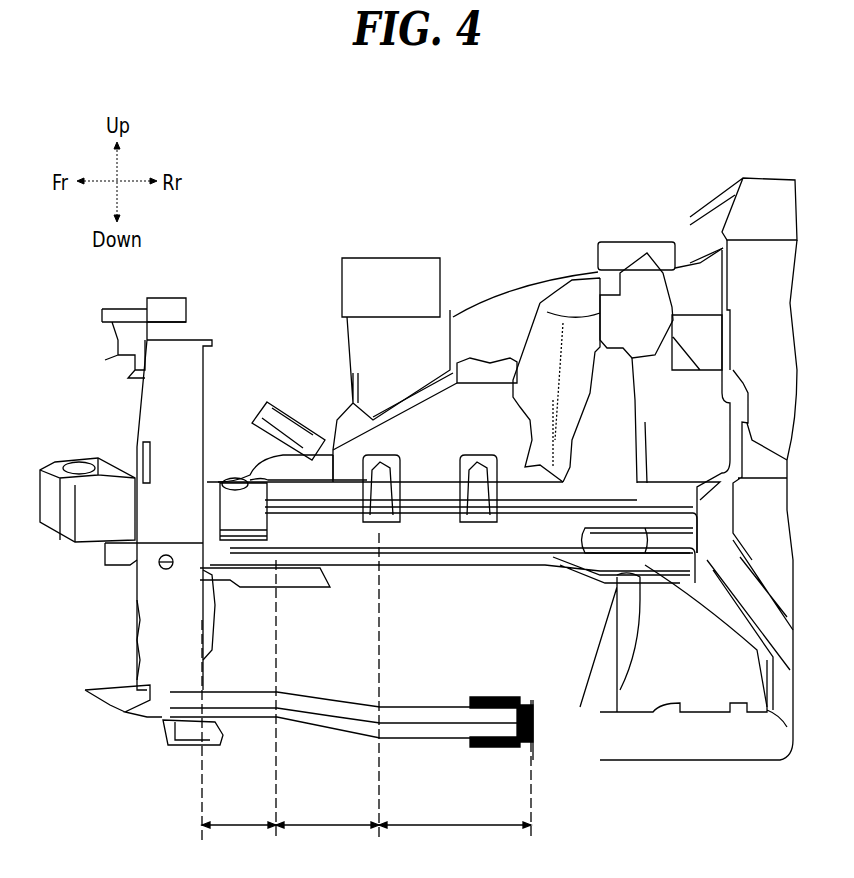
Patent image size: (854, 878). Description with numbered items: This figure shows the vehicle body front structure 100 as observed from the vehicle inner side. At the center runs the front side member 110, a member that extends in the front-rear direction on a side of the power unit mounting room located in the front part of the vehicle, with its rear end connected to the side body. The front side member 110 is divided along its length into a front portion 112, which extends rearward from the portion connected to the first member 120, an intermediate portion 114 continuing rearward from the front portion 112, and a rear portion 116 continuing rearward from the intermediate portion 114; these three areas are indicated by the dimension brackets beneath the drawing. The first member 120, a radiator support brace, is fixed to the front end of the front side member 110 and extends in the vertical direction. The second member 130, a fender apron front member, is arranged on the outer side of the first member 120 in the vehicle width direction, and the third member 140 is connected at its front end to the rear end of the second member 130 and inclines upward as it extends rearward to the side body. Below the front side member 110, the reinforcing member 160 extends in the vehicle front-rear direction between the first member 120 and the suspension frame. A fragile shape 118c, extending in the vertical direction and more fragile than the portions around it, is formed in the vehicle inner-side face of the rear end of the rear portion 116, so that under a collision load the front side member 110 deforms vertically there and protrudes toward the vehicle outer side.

The vehicle body front structure 100 is at (462, 178).
The front side member 110 is at (358, 572).
The front portion 112 is at (239, 700).
The intermediate portion 114 is at (327, 686).
The rear portion 116 is at (455, 770).
The fragile shape 118c is at (593, 642).
The first member 120 is at (158, 645).
The second member 130 is at (252, 458).
The third member 140 is at (495, 272).
The reinforcing member 160 is at (413, 695).